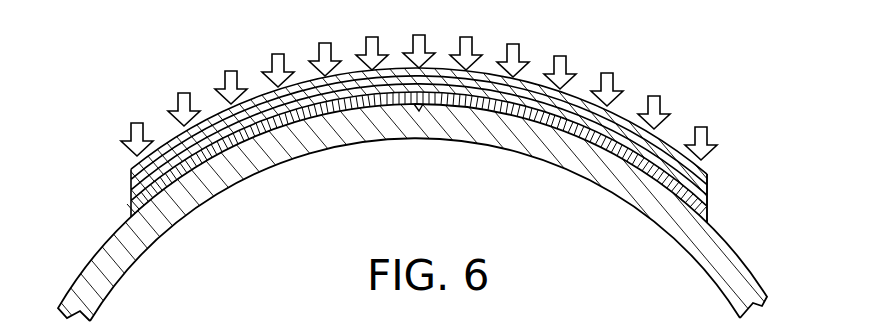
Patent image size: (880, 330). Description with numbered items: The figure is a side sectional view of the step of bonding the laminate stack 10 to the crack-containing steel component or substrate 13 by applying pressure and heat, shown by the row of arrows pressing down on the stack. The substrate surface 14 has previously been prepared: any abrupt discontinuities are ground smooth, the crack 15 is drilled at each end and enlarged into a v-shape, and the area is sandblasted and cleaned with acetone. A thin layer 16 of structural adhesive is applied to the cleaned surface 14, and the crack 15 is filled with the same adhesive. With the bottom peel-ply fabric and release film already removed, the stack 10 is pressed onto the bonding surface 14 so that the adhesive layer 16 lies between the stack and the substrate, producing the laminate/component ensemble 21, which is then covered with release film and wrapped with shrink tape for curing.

The laminate stack 10 is at (556, 104).
The steel component or substrate 13 is at (669, 226).
The substrate surface 14 is at (733, 247).
The crack 15 is at (420, 111).
The adhesive layer 16 is at (626, 153).
The laminate/component ensemble 21 is at (720, 179).